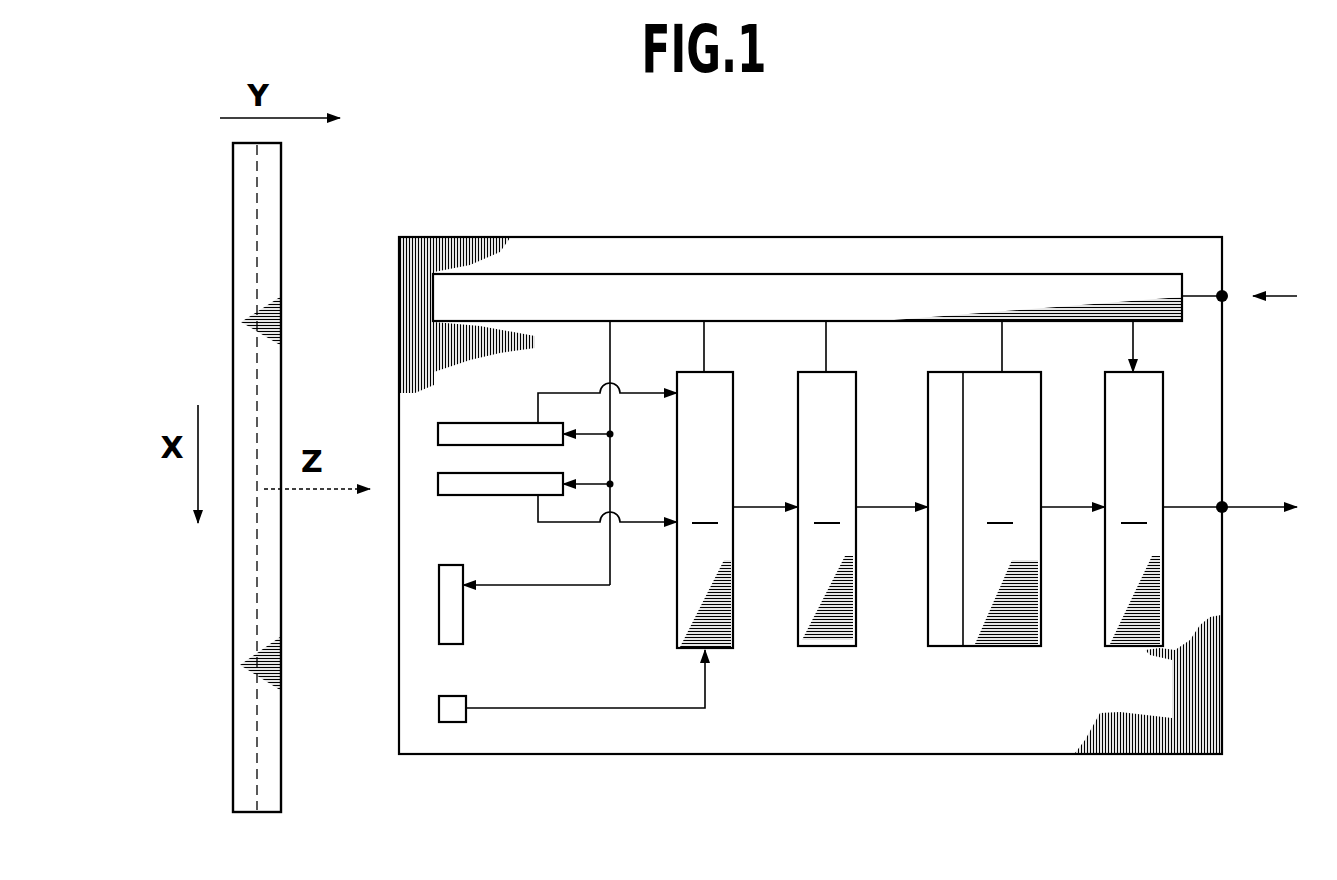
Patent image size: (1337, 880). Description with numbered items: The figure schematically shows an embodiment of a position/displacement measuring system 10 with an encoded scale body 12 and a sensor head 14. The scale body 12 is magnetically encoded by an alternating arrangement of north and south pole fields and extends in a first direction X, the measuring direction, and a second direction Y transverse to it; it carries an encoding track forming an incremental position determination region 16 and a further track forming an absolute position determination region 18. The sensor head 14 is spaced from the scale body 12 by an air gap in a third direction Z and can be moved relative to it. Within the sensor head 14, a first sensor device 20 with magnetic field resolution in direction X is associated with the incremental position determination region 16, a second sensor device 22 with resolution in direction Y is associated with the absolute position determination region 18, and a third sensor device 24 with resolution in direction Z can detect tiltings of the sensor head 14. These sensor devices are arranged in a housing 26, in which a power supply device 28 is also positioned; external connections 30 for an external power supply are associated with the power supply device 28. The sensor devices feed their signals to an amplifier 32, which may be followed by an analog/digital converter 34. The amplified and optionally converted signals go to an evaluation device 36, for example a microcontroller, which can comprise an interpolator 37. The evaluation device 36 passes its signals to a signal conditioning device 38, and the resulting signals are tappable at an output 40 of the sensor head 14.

The position/displacement measuring system 10 is at (1035, 186).
The scale body 12 is at (220, 252).
The sensor head 14 is at (700, 755).
The incremental position determination region 16 is at (268, 223).
The absolute position determination region 18 is at (245, 695).
The first sensor device 20 is at (437, 603).
The second sensor device 22 is at (423, 431).
The third sensor device 24 is at (437, 710).
The housing 26 is at (547, 255).
The power supply device 28 is at (788, 293).
The external connection 30 is at (1226, 294).
The amplifier 32 is at (737, 510).
The analog/digital converter 34 is at (863, 509).
The evaluation device 36 is at (1016, 509).
The interpolator 37 is at (950, 625).
The signal conditioning device 38 is at (1163, 509).
The output 40 is at (1226, 505).